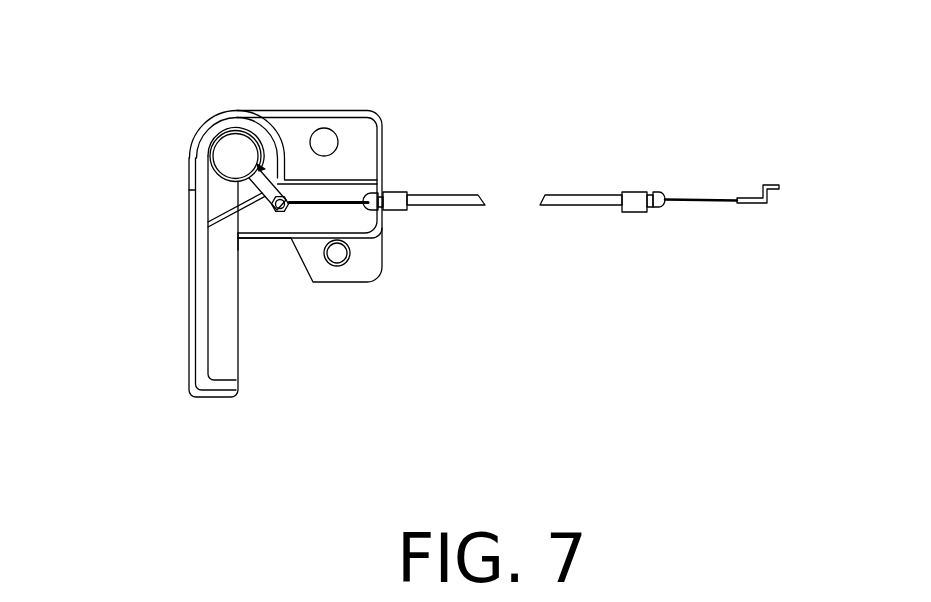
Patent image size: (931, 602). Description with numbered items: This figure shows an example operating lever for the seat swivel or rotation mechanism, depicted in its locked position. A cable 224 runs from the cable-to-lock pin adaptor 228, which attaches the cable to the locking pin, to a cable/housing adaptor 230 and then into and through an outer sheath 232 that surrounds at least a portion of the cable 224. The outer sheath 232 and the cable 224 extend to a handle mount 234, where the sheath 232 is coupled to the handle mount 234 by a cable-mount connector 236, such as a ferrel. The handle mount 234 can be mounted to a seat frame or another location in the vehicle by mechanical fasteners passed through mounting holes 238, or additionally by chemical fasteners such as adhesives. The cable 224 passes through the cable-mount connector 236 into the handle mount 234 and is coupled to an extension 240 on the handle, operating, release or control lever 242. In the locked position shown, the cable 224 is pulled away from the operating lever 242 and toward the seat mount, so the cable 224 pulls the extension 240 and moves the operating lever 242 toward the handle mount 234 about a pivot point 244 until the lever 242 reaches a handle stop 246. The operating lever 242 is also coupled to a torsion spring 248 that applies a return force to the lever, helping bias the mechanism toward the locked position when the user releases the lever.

The cable 224 is at (712, 262).
The cable-to-lock pin adaptor 228 is at (767, 183).
The cable/housing adaptor 230 is at (629, 190).
The outer sheath 232 is at (557, 192).
The handle mount 234 is at (362, 267).
The cable-mount connector 236 is at (392, 210).
The mounting holes 238 is at (326, 138).
The extension 240 is at (279, 212).
The operating lever 242 is at (205, 303).
The pivot point 244 is at (235, 152).
The handle stop 246 is at (240, 243).
The torsion spring 248 is at (265, 168).